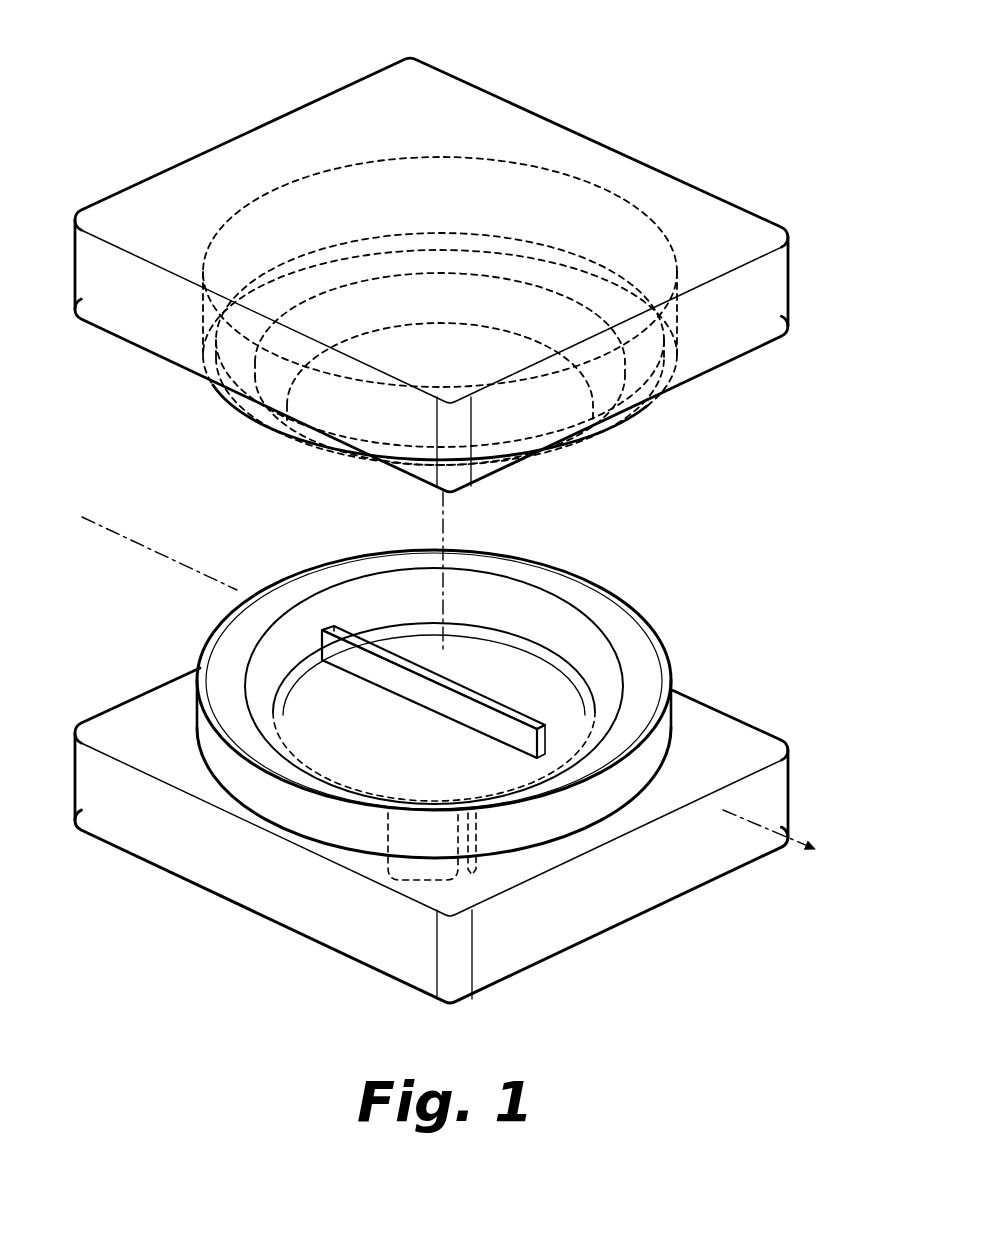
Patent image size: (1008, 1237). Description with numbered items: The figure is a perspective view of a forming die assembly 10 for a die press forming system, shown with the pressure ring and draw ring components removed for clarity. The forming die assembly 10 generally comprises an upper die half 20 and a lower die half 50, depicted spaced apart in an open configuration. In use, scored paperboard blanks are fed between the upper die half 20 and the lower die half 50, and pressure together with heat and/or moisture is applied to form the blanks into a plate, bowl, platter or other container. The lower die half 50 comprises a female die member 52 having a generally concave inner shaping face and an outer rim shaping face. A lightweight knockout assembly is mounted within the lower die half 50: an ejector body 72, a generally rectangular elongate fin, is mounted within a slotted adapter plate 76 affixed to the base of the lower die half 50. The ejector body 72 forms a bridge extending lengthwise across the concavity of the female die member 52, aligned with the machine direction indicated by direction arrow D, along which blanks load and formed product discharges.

The forming die assembly 10 is at (636, 60).
The upper die half 20 is at (804, 320).
The lower die half 50 is at (740, 628).
The female die member 52 is at (232, 676).
The ejector body 72 is at (342, 648).
The adapter plate 76 is at (508, 652).